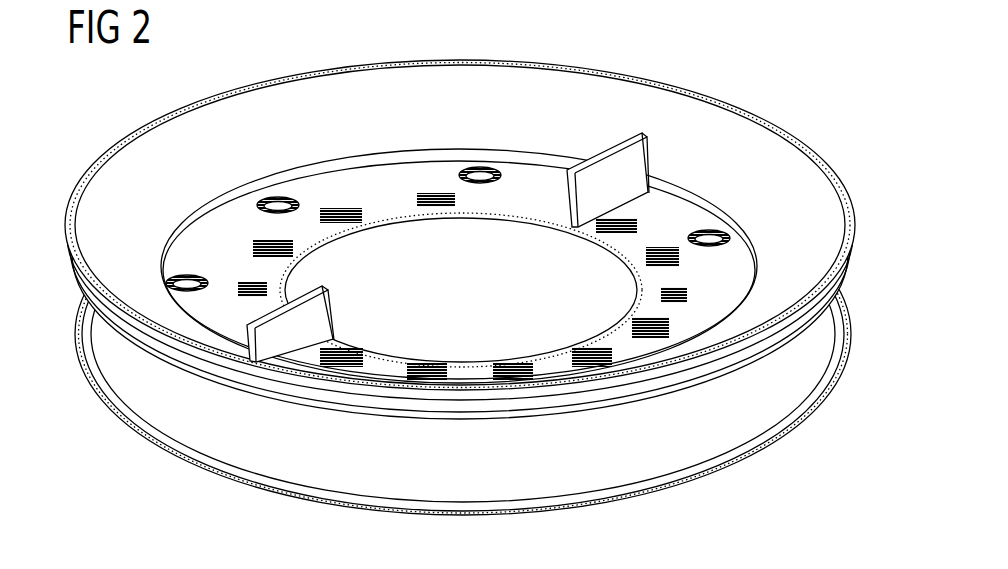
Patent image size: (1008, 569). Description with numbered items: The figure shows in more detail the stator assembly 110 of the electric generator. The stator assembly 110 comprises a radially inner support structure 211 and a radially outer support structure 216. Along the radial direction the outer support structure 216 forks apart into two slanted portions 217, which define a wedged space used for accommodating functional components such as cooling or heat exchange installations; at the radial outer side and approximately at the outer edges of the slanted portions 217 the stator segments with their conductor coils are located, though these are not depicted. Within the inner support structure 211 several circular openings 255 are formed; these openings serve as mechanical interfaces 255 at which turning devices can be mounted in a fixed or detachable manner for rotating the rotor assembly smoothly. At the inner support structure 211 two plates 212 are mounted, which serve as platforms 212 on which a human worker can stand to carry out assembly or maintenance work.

The stator assembly 110 is at (460, 261).
The radially inner support structure 211 is at (633, 288).
The plates 212 is at (632, 163).
The radially outer support structure 216 is at (589, 100).
The slanted portions 217 is at (646, 466).
The circular openings 255 is at (278, 198).